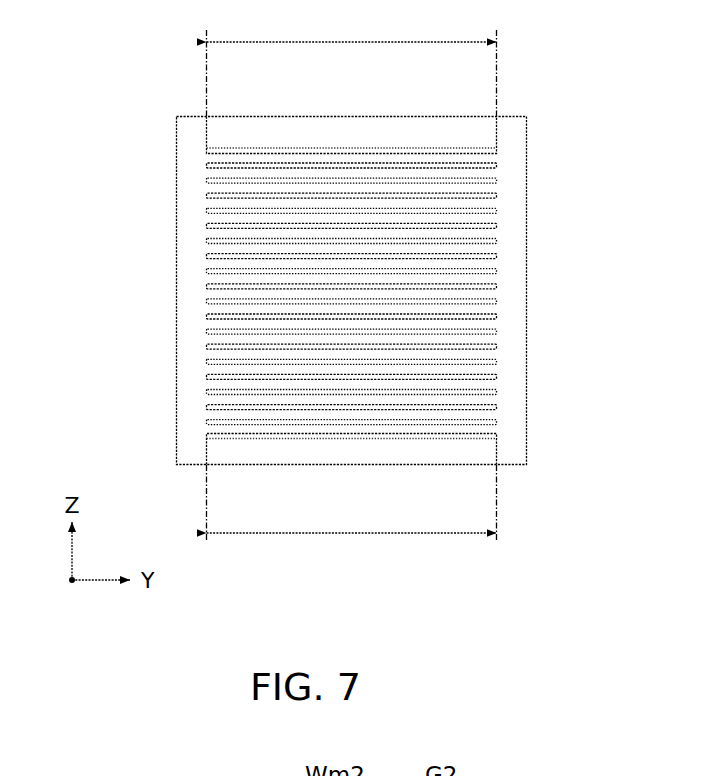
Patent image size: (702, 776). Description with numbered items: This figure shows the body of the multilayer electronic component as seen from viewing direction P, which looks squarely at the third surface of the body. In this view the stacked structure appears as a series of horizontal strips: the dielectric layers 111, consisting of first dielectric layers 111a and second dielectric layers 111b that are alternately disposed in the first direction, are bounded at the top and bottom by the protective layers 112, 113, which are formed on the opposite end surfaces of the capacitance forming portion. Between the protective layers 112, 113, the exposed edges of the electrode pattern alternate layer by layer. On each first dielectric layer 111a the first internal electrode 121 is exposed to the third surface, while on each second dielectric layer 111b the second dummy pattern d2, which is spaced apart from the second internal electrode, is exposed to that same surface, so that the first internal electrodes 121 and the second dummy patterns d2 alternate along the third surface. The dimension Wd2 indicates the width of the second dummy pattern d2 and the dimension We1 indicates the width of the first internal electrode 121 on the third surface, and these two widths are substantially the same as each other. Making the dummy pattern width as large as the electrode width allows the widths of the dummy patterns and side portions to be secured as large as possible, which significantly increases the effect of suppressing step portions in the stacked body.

The dielectric layers 111 is at (265, 292).
The first dielectric layer 111a is at (212, 174).
The second dielectric layer 111b is at (212, 189).
The protective layer 112 is at (354, 130).
The protective layer 113 is at (388, 448).
The first internal electrode 121 is at (313, 288).
The viewing direction P is at (313, 347).
The width of second dummy pattern Wd2 is at (352, 64).
The width of first internal electrode We1 is at (352, 514).
The second dummy pattern d2 is at (420, 178).